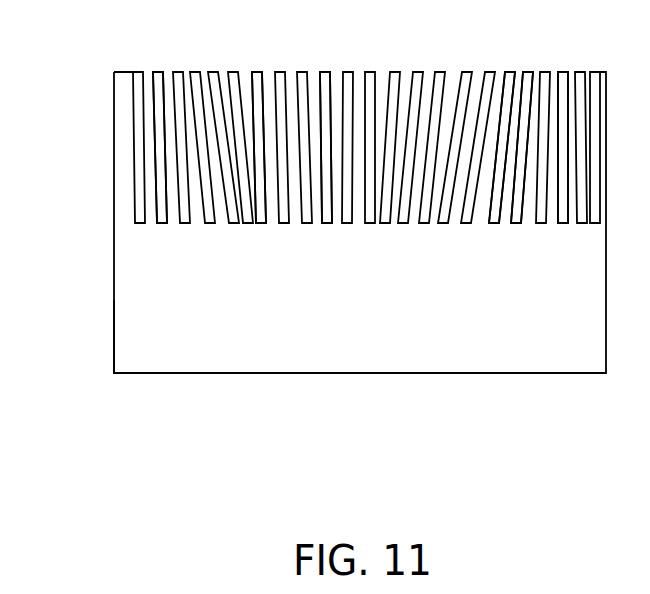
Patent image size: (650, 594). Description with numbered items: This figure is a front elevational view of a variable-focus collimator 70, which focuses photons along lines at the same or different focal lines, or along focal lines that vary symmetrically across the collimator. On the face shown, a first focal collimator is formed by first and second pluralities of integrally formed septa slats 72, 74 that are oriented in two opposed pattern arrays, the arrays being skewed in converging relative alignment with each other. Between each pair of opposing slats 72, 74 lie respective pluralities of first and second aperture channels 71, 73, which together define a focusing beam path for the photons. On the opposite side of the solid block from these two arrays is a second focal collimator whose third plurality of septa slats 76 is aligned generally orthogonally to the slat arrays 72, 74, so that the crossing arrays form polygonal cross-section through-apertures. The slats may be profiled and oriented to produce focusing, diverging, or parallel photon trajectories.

The variable-focus collimator 70 is at (219, 405).
The first aperture channels 71 is at (147, 222).
The first plurality of septa slats 72 is at (353, 66).
The second aperture channels 73 is at (560, 222).
The second plurality of septa slats 74 is at (605, 66).
The third plurality of septa slats 76 is at (132, 346).